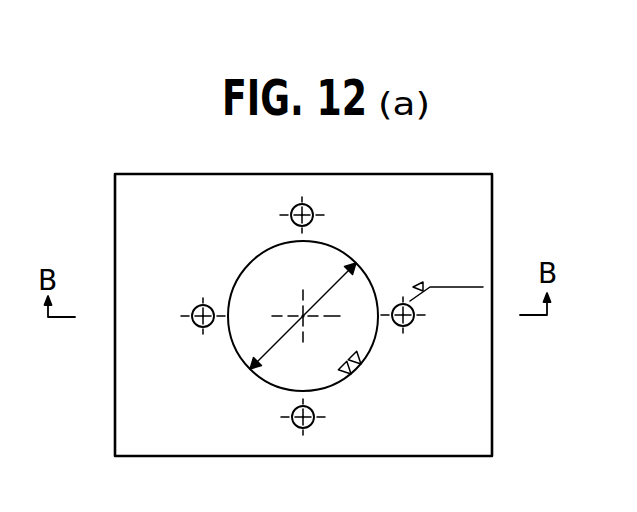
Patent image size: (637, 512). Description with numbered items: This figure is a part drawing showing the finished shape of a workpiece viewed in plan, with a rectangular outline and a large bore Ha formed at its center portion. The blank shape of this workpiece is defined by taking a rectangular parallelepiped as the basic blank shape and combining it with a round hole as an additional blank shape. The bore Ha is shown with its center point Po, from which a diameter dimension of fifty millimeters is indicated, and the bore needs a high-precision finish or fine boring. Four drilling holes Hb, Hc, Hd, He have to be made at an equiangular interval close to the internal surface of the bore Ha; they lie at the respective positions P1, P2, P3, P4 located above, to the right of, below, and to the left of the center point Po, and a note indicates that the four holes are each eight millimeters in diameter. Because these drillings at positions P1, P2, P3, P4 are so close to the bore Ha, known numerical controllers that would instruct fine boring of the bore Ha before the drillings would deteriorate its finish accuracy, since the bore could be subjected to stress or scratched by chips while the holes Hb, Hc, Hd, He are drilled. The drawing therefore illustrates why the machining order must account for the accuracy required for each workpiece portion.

The bore Ha is at (265, 381).
The drilling hole Hb is at (335, 217).
The drilling hole Hc is at (432, 329).
The drilling hole Hd is at (312, 427).
The drilling hole He is at (194, 346).
The center point of recess Po is at (305, 318).
The drilling position P1 is at (311, 208).
The drilling position P2 is at (411, 324).
The drilling position P3 is at (312, 424).
The drilling position P4 is at (196, 326).